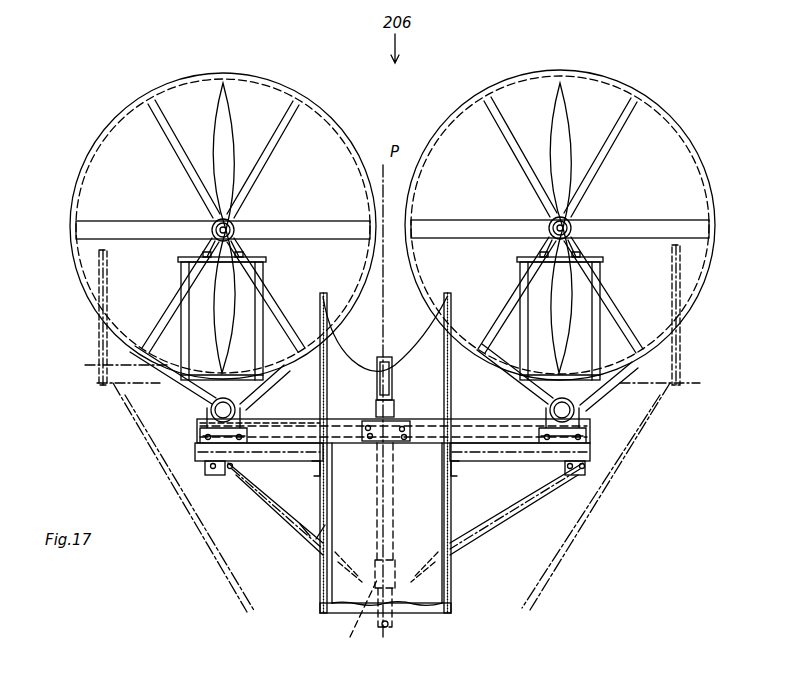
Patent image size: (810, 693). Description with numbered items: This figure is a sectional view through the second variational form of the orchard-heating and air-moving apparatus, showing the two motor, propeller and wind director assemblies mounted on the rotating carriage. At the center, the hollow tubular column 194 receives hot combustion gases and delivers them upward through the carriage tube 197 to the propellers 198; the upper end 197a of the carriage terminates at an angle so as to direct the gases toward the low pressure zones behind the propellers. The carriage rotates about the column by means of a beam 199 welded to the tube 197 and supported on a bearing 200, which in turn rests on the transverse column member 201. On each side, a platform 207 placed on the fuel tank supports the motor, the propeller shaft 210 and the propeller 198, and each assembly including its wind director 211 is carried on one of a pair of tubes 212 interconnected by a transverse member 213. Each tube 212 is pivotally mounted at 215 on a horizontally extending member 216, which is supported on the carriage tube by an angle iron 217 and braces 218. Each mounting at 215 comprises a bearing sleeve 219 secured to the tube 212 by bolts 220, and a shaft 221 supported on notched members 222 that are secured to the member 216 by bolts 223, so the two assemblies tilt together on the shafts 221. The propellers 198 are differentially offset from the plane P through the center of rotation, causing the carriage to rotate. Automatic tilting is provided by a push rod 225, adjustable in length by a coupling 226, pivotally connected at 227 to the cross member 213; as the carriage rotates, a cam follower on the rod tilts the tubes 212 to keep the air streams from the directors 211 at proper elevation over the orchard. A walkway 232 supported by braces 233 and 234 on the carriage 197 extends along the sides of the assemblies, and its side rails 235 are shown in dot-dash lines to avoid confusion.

The hollow tubular column 194 is at (433, 608).
The carriage tube 197 is at (408, 453).
The upper end of the carriage 197a is at (338, 333).
The propeller 198 is at (232, 97).
The beam 199 is at (392, 368).
The bearing 200 is at (397, 401).
The transverse column member 201 is at (352, 418).
The platform 207 is at (262, 263).
The propeller shaft 210 is at (238, 226).
The wind director 211 is at (323, 118).
The tube 212 is at (205, 430).
The transverse member 213 is at (270, 421).
The pivotal mounting 215 is at (200, 451).
The horizontally extending member 216 is at (272, 458).
The angle iron 217 is at (316, 466).
The brace 218 is at (305, 534).
The bearing sleeve 219 is at (225, 476).
The bolt 220 is at (211, 418).
The shaft 221 is at (215, 453).
The notched member 222 is at (230, 468).
The bolt 223 is at (260, 433).
The push rod 225 is at (389, 628).
The coupling 226 is at (353, 613).
The pivotal connection 227 is at (398, 446).
The walkway 232 is at (100, 352).
The brace 233 is at (170, 410).
The brace 234 is at (205, 549).
The side rail 235 is at (108, 258).